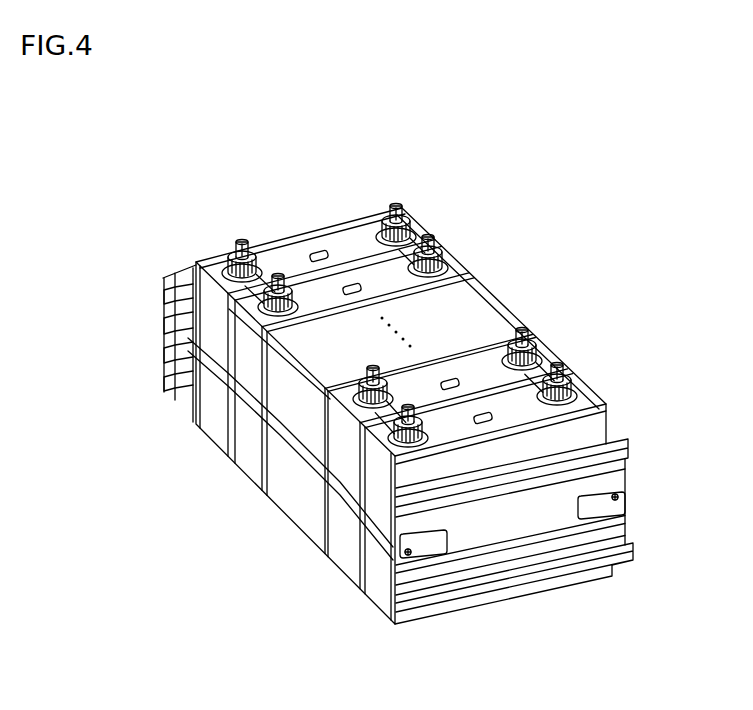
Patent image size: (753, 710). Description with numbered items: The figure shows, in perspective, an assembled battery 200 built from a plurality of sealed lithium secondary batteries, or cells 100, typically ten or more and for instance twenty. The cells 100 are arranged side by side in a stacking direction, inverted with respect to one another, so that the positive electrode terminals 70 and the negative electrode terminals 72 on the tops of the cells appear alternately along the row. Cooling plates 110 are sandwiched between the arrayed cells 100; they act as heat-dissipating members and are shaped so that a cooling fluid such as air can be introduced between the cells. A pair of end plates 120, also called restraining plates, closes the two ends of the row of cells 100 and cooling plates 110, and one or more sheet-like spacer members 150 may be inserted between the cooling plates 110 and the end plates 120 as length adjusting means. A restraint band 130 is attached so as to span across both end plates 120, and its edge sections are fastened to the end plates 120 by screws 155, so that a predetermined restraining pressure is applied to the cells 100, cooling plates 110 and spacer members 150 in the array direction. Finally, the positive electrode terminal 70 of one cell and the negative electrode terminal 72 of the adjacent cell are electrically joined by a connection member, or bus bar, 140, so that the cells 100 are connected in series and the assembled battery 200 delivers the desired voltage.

The assembled battery 200 is at (692, 142).
The sealed lithium secondary battery 100 is at (339, 250).
The cooling plate 110 is at (605, 412).
The end plate 120 is at (164, 280).
The restraint band 130 is at (348, 518).
The connection member 140 is at (272, 255).
The spacer member 150 is at (610, 425).
The screw 155 is at (626, 488).
The positive electrode terminal 70 is at (281, 272).
The negative electrode terminal 72 is at (247, 243).